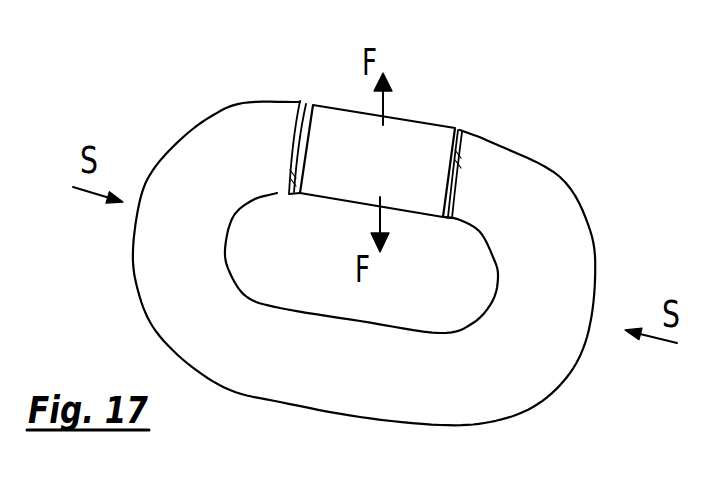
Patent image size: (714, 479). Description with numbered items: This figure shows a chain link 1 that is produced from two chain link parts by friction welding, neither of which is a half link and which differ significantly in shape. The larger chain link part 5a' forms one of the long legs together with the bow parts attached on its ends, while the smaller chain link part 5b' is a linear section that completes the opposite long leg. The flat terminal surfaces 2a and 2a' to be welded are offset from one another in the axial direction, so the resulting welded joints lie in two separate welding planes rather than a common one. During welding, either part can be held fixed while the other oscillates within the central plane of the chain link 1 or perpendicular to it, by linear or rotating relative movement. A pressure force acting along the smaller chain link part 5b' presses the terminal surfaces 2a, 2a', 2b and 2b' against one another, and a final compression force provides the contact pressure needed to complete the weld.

The chain link 1 is at (604, 154).
The terminal surface 2a is at (273, 112).
The terminal surface 2b is at (289, 233).
The terminal surface 2a' is at (440, 253).
The terminal surface 2b' is at (530, 126).
The larger chain link part 5a' is at (364, 290).
The smaller chain link part 5b' is at (410, 128).